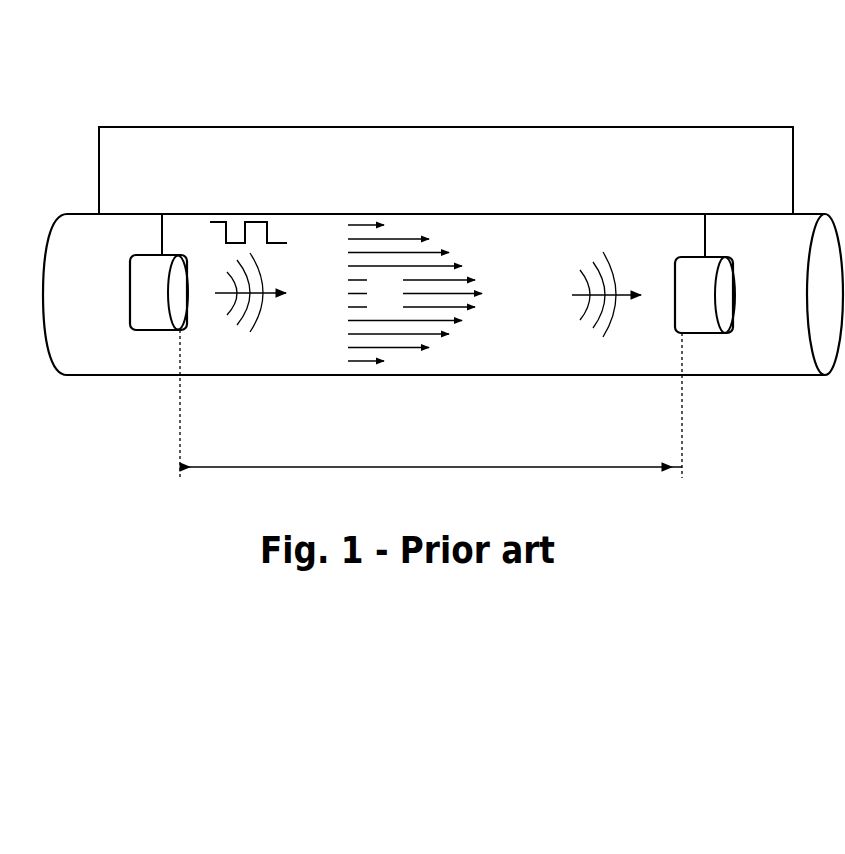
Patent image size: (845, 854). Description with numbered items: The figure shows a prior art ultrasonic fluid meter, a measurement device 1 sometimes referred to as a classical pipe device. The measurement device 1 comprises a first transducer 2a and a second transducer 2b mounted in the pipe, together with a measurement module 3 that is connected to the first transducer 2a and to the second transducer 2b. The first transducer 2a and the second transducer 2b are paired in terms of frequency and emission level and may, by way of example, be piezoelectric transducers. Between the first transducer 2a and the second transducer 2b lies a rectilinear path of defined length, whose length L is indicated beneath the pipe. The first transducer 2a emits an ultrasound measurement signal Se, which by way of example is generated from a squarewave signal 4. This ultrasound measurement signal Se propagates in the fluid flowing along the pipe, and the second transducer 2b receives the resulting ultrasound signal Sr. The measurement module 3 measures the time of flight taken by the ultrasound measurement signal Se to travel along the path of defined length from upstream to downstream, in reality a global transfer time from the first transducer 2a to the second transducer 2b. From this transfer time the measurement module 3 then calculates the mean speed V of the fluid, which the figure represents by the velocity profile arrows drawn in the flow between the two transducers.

The measurement device 1 is at (271, 71).
The measurement module 3 is at (356, 131).
The squarewave signal 4 is at (238, 213).
The first transducer 2a is at (131, 317).
The second transducer 2b is at (733, 322).
The ultrasound measurement signal Se is at (262, 268).
The ultrasound signal Sr is at (612, 260).
The mean speed of the fluid V is at (391, 287).
The length of the path L is at (431, 413).